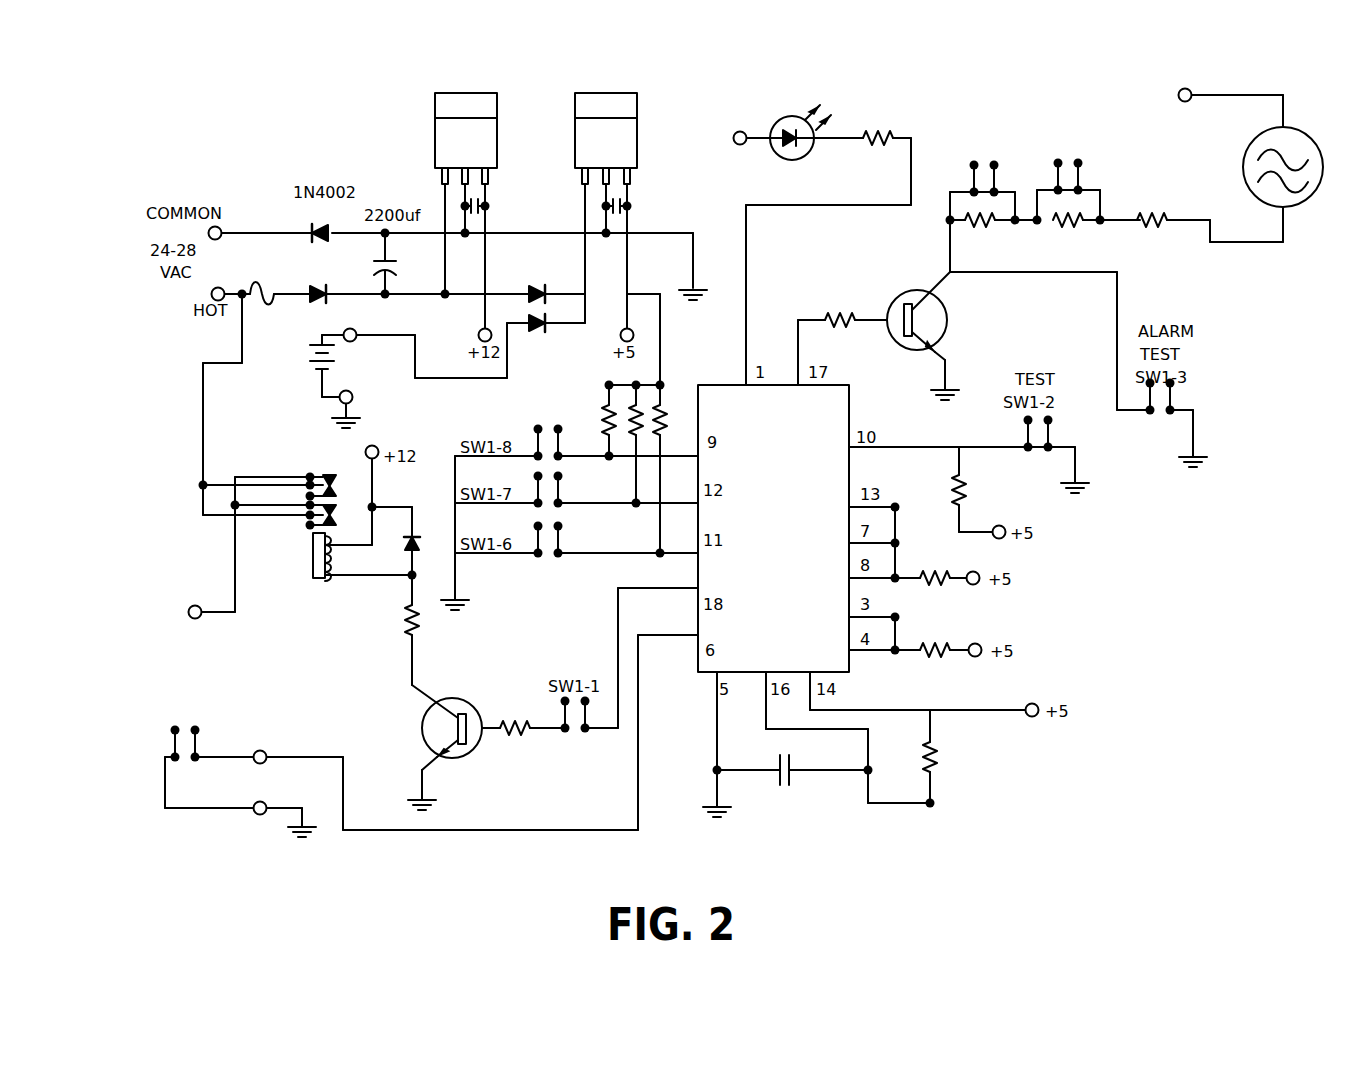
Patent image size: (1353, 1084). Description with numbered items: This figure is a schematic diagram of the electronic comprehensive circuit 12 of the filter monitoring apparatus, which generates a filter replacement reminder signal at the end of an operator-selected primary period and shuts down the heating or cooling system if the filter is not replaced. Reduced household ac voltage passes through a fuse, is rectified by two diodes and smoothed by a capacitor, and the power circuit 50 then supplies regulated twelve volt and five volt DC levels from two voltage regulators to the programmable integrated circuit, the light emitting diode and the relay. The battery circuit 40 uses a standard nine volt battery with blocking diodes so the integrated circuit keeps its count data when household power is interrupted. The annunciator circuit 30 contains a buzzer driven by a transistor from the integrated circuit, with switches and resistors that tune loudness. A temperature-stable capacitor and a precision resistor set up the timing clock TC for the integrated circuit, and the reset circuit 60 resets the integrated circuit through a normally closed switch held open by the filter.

The electronic comprehensive circuit 12 is at (858, 229).
The annunciator circuit 30 is at (1043, 167).
The battery circuit 40 is at (433, 371).
The power circuit 50 is at (197, 455).
The reset circuit 60 is at (165, 733).
The timing clock TC is at (831, 797).